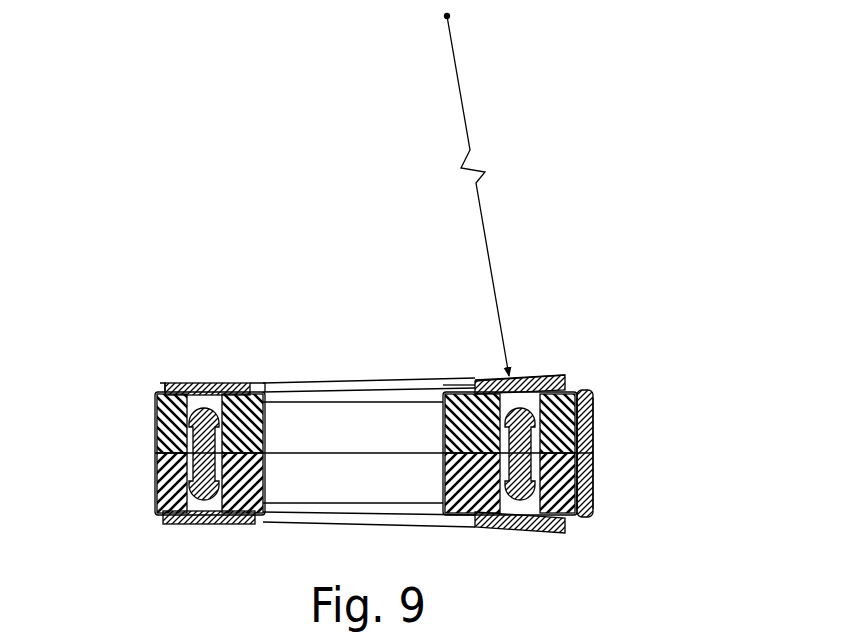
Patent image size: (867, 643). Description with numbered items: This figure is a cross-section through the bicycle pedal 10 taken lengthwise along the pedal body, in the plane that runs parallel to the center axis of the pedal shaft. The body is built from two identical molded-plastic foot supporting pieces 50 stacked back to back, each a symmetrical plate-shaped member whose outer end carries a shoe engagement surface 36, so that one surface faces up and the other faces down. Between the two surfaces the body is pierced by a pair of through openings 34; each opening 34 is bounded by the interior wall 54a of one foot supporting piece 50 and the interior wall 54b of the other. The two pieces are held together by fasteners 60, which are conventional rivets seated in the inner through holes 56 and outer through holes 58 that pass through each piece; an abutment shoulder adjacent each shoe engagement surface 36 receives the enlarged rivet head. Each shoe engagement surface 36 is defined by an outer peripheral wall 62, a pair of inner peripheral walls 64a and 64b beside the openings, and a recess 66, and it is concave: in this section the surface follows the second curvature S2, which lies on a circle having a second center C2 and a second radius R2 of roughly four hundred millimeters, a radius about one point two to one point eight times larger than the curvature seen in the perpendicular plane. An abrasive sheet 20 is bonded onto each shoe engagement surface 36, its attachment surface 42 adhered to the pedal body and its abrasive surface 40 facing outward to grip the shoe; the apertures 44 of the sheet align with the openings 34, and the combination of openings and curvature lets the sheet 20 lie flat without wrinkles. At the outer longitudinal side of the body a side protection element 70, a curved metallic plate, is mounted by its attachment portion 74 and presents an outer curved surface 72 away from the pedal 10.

The bicycle pedal 10 is at (602, 288).
The abrasive sheet 20 is at (553, 535).
The through opening 34 is at (440, 453).
The shoe engagement surface 36 is at (207, 380).
The abrasive surface 40 is at (175, 386).
The attachment surface 42 is at (200, 386).
The aperture 44 is at (463, 386).
The foot supporting piece 50 is at (155, 495).
The interior wall 54a is at (287, 506).
The interior wall 54b is at (280, 400).
The inner through hole 56 is at (190, 524).
The outer through hole 58 is at (513, 512).
The fastener 60 is at (526, 498).
The outer peripheral wall 62 is at (576, 524).
The inner peripheral wall 64a is at (258, 516).
The inner peripheral wall 64b is at (253, 395).
The recess 66 is at (160, 385).
The side protection element 70 is at (600, 470).
The outer curved surface 72 is at (593, 496).
The attachment portion 74 is at (586, 437).
The second center C2 is at (465, 21).
The second radius R2 is at (482, 196).
The second curvature S2 is at (530, 378).